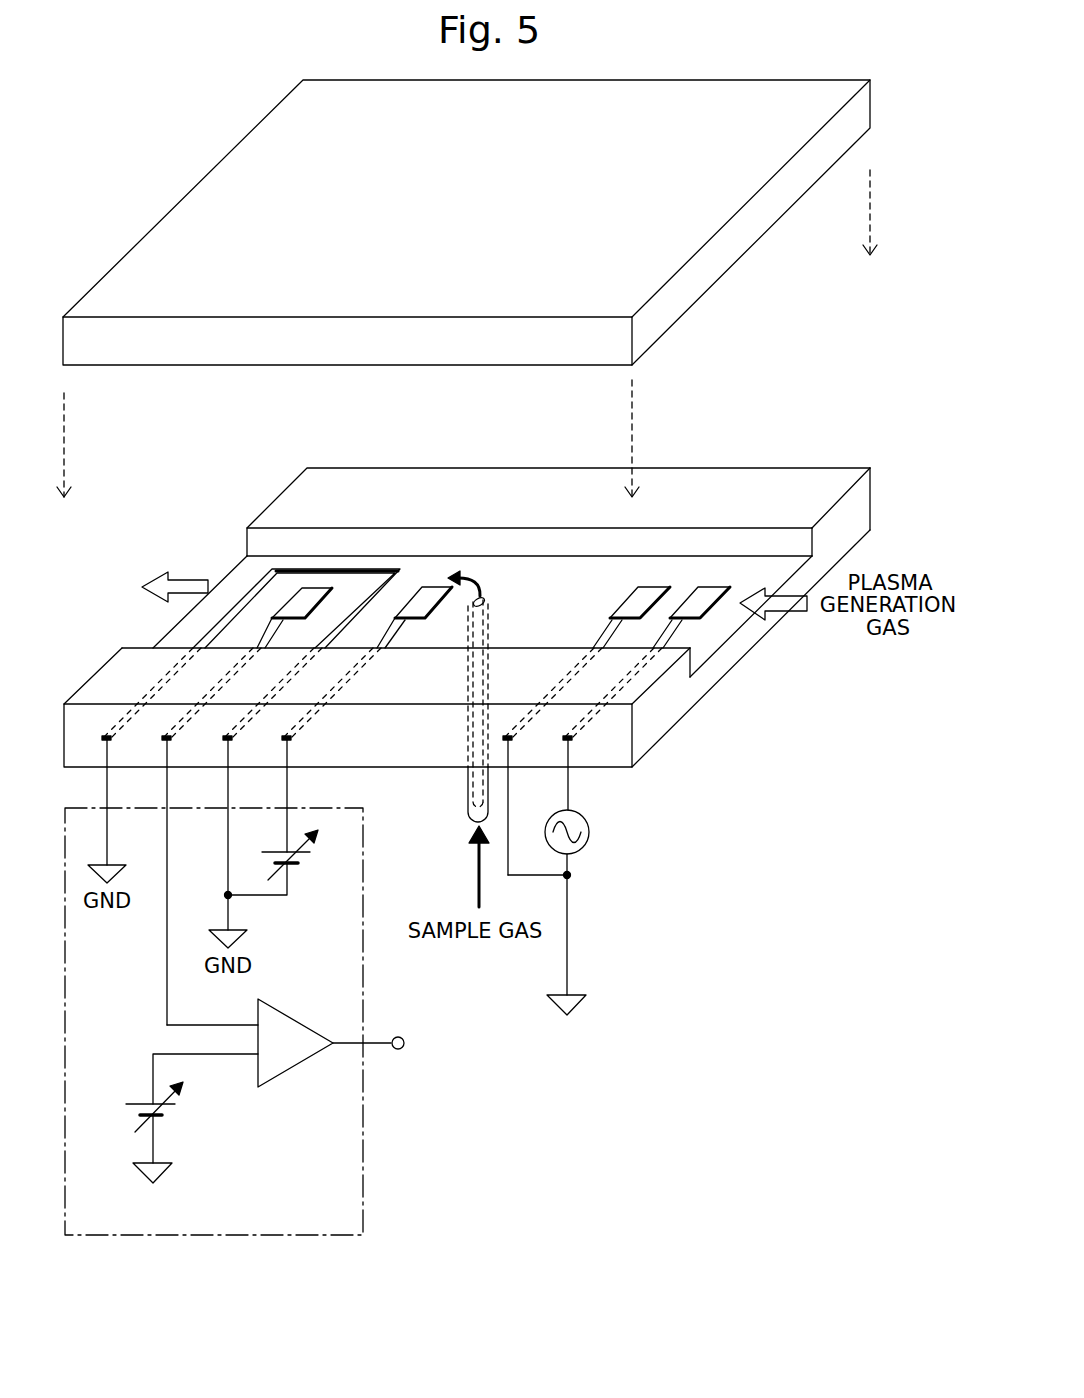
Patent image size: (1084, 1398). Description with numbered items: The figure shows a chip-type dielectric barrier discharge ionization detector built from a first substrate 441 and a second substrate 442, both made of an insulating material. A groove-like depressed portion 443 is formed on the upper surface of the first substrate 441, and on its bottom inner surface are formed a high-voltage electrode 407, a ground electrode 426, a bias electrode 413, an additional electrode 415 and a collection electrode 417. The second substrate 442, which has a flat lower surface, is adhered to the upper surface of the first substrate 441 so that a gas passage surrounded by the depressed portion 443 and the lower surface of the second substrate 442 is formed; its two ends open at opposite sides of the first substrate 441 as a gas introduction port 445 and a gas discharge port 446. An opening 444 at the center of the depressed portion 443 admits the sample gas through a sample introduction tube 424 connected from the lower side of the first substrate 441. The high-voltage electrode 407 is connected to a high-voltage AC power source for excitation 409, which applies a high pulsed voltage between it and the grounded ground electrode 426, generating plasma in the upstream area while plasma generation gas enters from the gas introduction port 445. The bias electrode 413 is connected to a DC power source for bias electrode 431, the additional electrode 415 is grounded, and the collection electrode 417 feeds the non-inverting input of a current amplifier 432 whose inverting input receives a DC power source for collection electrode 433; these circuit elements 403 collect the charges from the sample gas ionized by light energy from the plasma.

The second substrate 442 is at (872, 102).
The first substrate 441 is at (872, 497).
The depressed portion 443 is at (535, 597).
The opening 444 is at (483, 598).
The gas introduction port 445 is at (715, 633).
The gas discharge port 446 is at (220, 552).
The collection electrode 417 is at (313, 595).
The additional electrode 415 is at (365, 585).
The bias electrode 413 is at (437, 587).
The ground electrode 426 is at (650, 593).
The high-voltage electrode 407 is at (710, 593).
The sample introduction tube 424 is at (467, 790).
The high-voltage AC power source for excitation 409 is at (583, 850).
The detection circuit 403 is at (298, 1236).
The DC power source for bias electrode 431 is at (297, 870).
The current amplifier 432 is at (283, 1073).
The DC power source for collection electrode 433 is at (168, 1123).